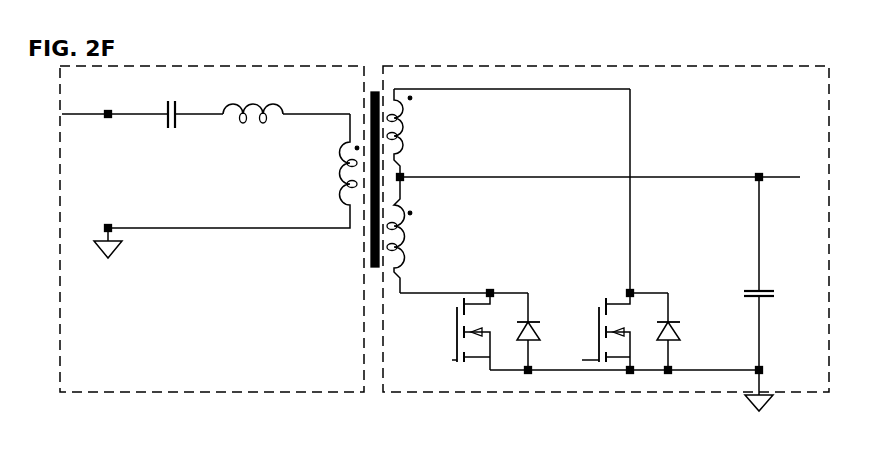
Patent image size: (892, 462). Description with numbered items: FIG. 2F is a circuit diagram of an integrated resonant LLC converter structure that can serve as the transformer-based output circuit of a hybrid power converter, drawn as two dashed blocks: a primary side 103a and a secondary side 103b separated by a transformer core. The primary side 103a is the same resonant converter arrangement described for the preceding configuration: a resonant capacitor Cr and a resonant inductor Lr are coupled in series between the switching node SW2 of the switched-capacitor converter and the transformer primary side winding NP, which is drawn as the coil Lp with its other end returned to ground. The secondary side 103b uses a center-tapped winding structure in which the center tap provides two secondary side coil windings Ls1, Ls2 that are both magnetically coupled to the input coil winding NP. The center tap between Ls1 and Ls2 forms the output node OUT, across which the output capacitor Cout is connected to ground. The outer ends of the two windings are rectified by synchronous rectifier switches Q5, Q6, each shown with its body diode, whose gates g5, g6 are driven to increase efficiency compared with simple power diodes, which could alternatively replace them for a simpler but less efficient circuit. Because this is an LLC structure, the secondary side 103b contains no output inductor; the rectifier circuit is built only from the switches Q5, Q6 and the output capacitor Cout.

The primary side 103a is at (312, 392).
The secondary side 103b is at (403, 392).
The switching node SW2 is at (115, 108).
The resonant capacitor Cr is at (192, 107).
The resonant inductor Lr is at (253, 105).
The transformer primary side winding NP is at (316, 106).
The transformer primary winding Lp is at (233, 171).
The secondary side coil winding Ls1 is at (415, 133).
The secondary side coil winding Ls2 is at (415, 235).
The synchronous rectifier switch Q5 is at (480, 332).
The gate of switch Q5 g5 is at (444, 364).
The synchronous rectifier switch Q6 is at (630, 231).
The gate of switch Q6 g6 is at (579, 364).
The output OUT is at (609, 172).
The output capacitor Cout is at (770, 286).